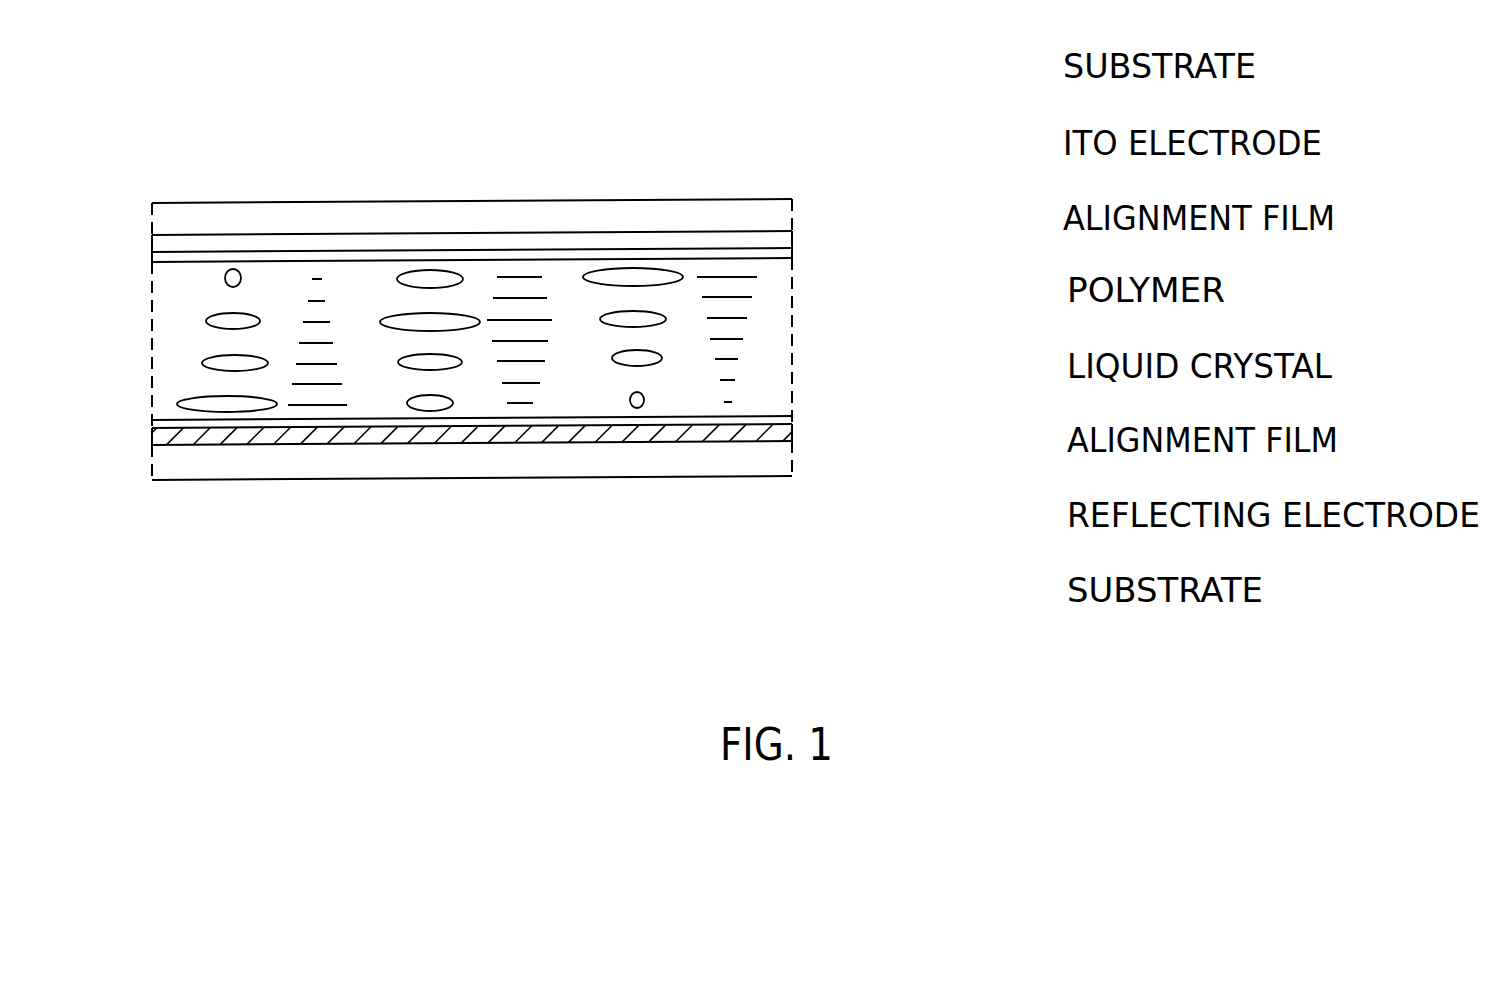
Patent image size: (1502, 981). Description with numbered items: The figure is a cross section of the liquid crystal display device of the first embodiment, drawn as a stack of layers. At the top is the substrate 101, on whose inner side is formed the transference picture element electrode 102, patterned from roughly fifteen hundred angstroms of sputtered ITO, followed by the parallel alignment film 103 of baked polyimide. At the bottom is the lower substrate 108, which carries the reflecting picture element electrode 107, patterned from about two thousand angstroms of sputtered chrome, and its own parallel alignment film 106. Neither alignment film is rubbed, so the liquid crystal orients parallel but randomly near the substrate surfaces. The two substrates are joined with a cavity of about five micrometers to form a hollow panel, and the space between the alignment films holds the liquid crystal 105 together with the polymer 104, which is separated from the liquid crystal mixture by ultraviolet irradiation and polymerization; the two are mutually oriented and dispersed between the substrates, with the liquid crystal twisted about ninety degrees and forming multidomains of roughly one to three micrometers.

The substrate 101 is at (772, 208).
The transference picture element electrode 102 is at (780, 232).
The parallel alignment film 103 is at (792, 252).
The polymer 104 is at (657, 313).
The liquid crystal 105 is at (733, 358).
The parallel alignment film 106 is at (788, 415).
The reflecting picture element electrode 107 is at (783, 430).
The lower substrate 108 is at (778, 460).